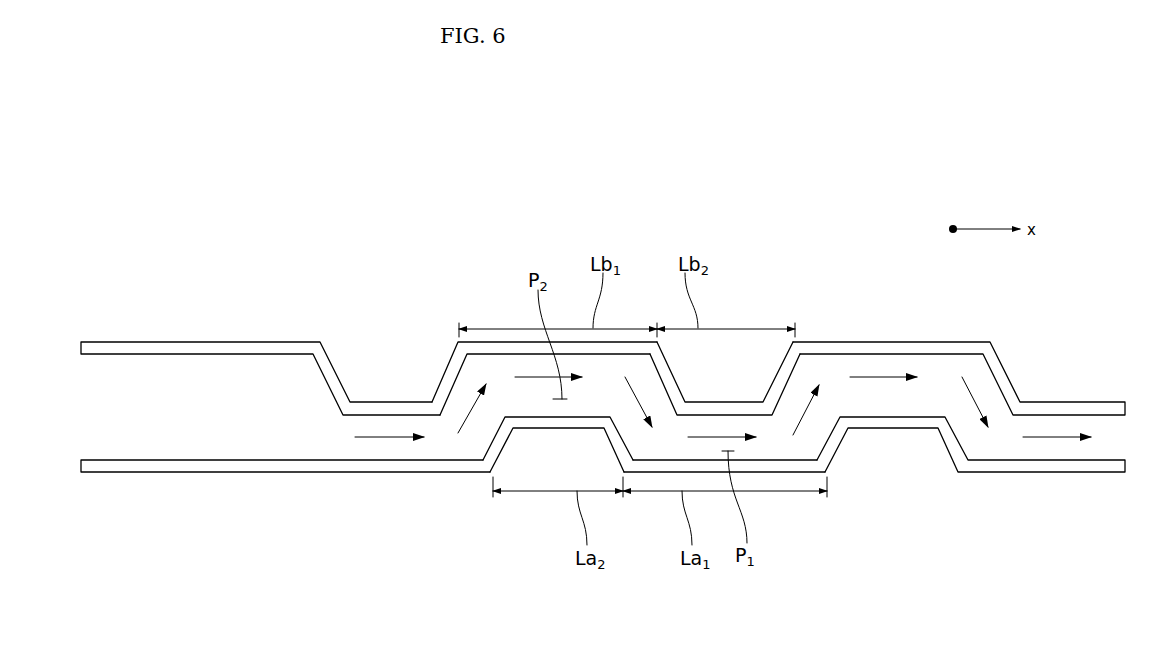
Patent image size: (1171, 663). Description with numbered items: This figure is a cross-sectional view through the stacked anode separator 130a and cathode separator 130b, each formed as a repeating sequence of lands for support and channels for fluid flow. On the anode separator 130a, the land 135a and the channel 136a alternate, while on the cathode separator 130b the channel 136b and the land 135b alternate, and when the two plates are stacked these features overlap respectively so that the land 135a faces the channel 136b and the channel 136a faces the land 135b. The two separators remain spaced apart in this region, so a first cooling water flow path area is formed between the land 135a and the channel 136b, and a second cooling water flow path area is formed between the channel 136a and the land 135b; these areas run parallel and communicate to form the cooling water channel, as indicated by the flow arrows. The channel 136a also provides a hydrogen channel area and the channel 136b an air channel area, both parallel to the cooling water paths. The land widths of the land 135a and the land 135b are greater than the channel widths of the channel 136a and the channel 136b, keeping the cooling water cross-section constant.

The anode separator 130a is at (603, 515).
The cathode separator 130b is at (603, 342).
The land 135a is at (782, 462).
The land 135b is at (500, 345).
The channel 136a is at (548, 457).
The channel 136b is at (748, 375).